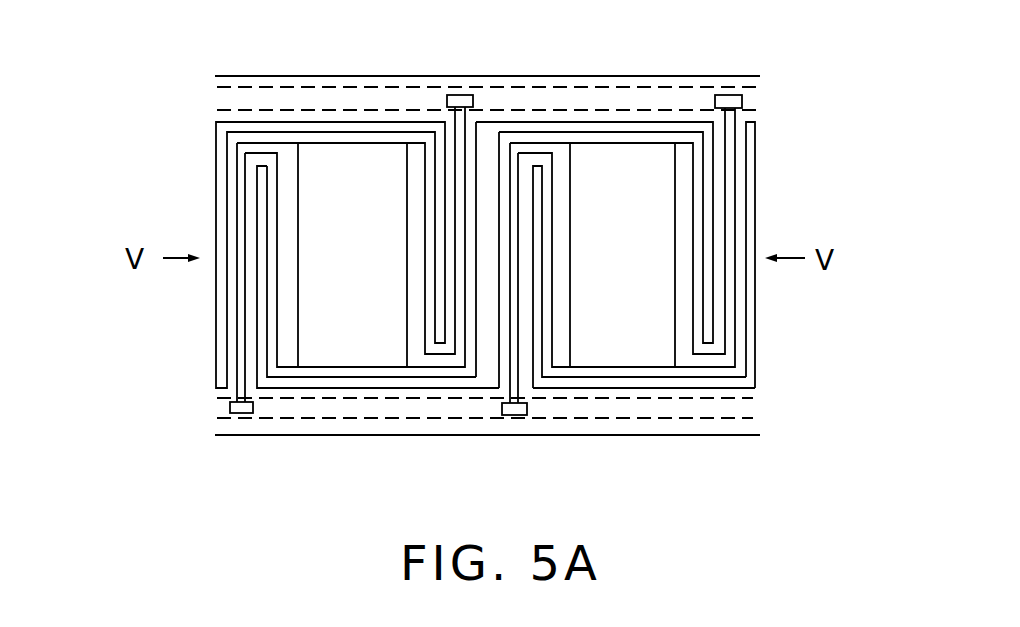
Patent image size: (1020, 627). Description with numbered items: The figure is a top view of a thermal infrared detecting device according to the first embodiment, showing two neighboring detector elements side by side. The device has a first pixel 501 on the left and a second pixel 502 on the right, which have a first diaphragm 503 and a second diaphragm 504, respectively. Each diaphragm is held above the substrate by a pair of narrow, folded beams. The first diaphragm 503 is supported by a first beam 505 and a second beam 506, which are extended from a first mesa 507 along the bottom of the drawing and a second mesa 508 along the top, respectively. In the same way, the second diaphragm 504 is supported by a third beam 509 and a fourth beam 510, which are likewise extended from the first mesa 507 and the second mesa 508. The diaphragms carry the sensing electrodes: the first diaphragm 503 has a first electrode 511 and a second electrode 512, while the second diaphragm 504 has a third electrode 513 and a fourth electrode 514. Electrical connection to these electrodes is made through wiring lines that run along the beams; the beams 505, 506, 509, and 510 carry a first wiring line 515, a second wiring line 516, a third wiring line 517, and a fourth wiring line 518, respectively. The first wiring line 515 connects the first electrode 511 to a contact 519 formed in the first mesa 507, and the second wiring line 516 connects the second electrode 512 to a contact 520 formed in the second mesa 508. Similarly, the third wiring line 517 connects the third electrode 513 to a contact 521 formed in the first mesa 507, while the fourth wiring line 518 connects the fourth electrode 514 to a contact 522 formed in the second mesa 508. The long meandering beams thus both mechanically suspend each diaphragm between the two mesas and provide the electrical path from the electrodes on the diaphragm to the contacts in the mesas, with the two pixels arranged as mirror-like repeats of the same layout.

The first pixel 501 is at (340, 236).
The second pixel 502 is at (629, 249).
The first diaphragm 503 is at (310, 388).
The second diaphragm 504 is at (643, 385).
The first beam 505 is at (228, 315).
The second beam 506 is at (473, 157).
The first mesa 507 is at (375, 427).
The second mesa 508 is at (409, 84).
The third beam 509 is at (500, 373).
The fourth beam 510 is at (742, 340).
The first electrode 511 is at (285, 257).
The second electrode 512 is at (410, 282).
The third electrode 513 is at (565, 280).
The fourth electrode 514 is at (680, 240).
The first wiring line 515 is at (238, 333).
The second wiring line 516 is at (463, 122).
The third wiring line 517 is at (512, 388).
The fourth wiring line 518 is at (728, 320).
The contact 519 is at (243, 413).
The contact 520 is at (458, 95).
The contact 521 is at (513, 407).
The contact 522 is at (727, 96).